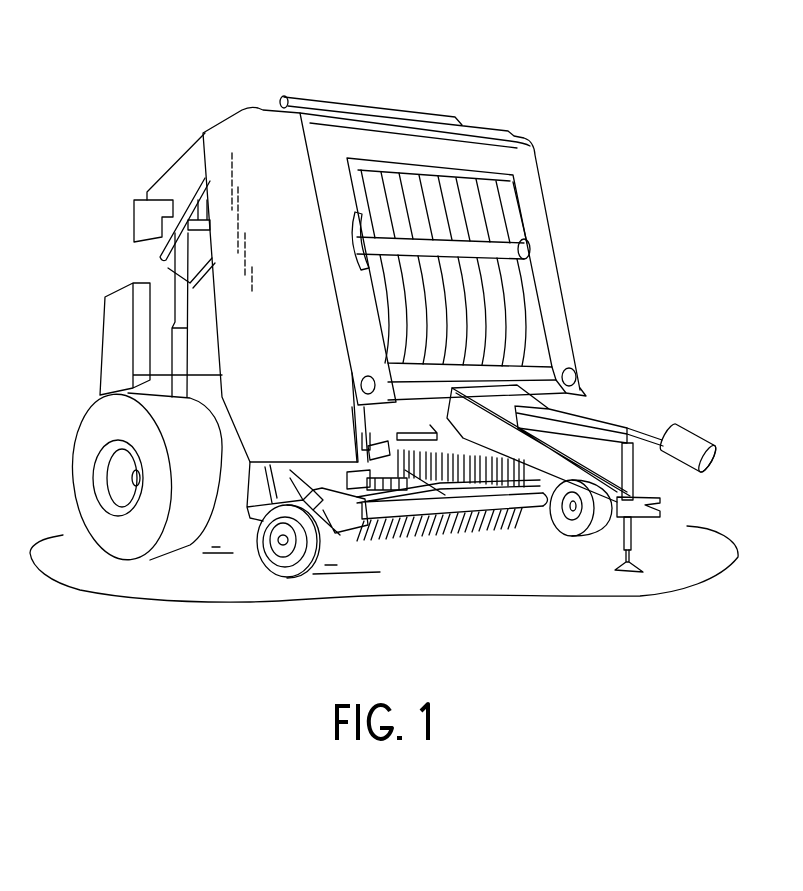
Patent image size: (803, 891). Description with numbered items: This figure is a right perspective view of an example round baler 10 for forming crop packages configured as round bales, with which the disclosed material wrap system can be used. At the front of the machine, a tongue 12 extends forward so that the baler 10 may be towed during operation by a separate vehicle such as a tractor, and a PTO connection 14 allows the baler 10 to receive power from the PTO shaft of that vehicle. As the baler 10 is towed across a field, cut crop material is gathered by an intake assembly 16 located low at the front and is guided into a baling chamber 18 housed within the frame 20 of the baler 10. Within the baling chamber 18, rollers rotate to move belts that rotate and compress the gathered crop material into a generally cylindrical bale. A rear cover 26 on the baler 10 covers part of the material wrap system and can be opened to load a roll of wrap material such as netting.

The round baler 10 is at (613, 71).
The tongue 12 is at (612, 505).
The PTO connection 14 is at (607, 422).
The intake assembly 16 is at (475, 551).
The baling chamber 18 is at (272, 222).
The frame 20 is at (255, 108).
The rear cover 26 is at (118, 288).